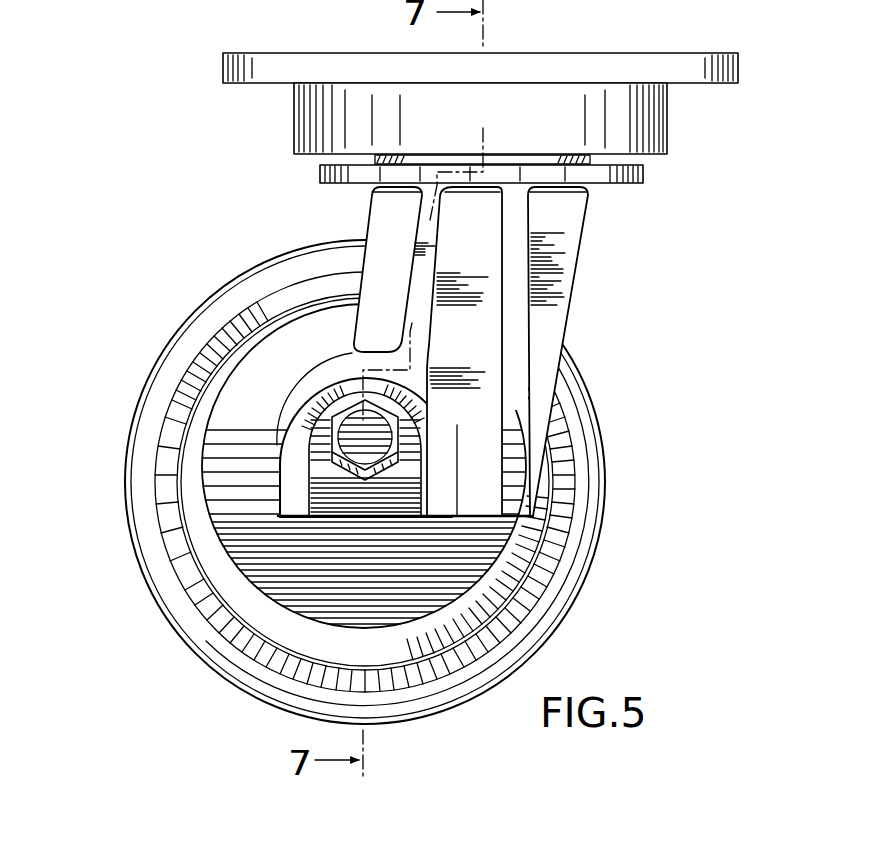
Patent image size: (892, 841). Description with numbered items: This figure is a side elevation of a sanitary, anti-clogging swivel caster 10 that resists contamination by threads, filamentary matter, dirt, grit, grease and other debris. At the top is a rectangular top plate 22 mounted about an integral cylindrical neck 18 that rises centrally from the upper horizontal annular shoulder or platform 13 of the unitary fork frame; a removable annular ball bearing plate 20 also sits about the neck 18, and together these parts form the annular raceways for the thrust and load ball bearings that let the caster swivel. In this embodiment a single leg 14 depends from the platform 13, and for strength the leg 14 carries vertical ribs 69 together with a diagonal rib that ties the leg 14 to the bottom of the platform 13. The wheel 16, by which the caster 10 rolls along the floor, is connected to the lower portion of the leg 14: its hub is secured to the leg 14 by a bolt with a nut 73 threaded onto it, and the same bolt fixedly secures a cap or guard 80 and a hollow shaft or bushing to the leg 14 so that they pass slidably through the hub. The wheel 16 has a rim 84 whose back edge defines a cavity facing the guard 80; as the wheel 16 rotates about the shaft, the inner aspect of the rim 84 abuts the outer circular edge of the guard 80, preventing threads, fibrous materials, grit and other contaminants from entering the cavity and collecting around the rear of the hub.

The caster 10 is at (163, 110).
The annular shoulder or platform 13 is at (636, 168).
The leg 14 is at (556, 297).
The wheel 16 is at (604, 541).
The cylindrical neck 18 is at (590, 162).
The annular ball bearing plate 20 is at (670, 115).
The rectangular top plate 22 is at (742, 52).
The vertical ribs 69 is at (420, 229).
The nut 73 is at (347, 420).
The cap or guard 80 is at (275, 578).
The rim 84 is at (513, 607).